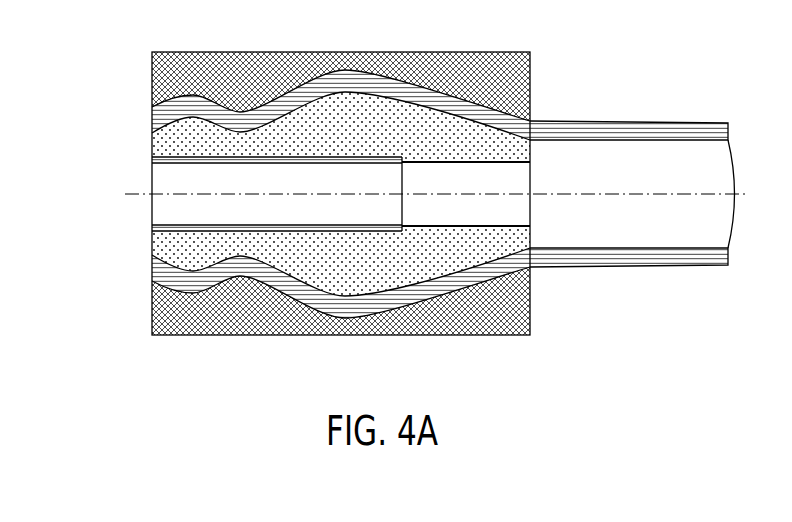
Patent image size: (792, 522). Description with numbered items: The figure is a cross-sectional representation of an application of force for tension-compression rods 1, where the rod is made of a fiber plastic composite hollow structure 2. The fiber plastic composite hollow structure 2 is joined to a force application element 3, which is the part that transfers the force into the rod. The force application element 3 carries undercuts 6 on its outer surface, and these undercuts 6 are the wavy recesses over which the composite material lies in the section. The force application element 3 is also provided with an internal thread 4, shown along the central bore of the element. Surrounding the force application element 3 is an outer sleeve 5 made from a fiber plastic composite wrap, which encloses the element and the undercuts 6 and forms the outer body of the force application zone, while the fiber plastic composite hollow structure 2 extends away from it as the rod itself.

The tension-compression rod 1 is at (440, 167).
The fiber plastic composite hollow structure 2 is at (672, 130).
The force application element 3 is at (433, 115).
The internal thread 4 is at (318, 155).
The outer sleeve 5 is at (455, 73).
The undercuts 6 is at (405, 102).